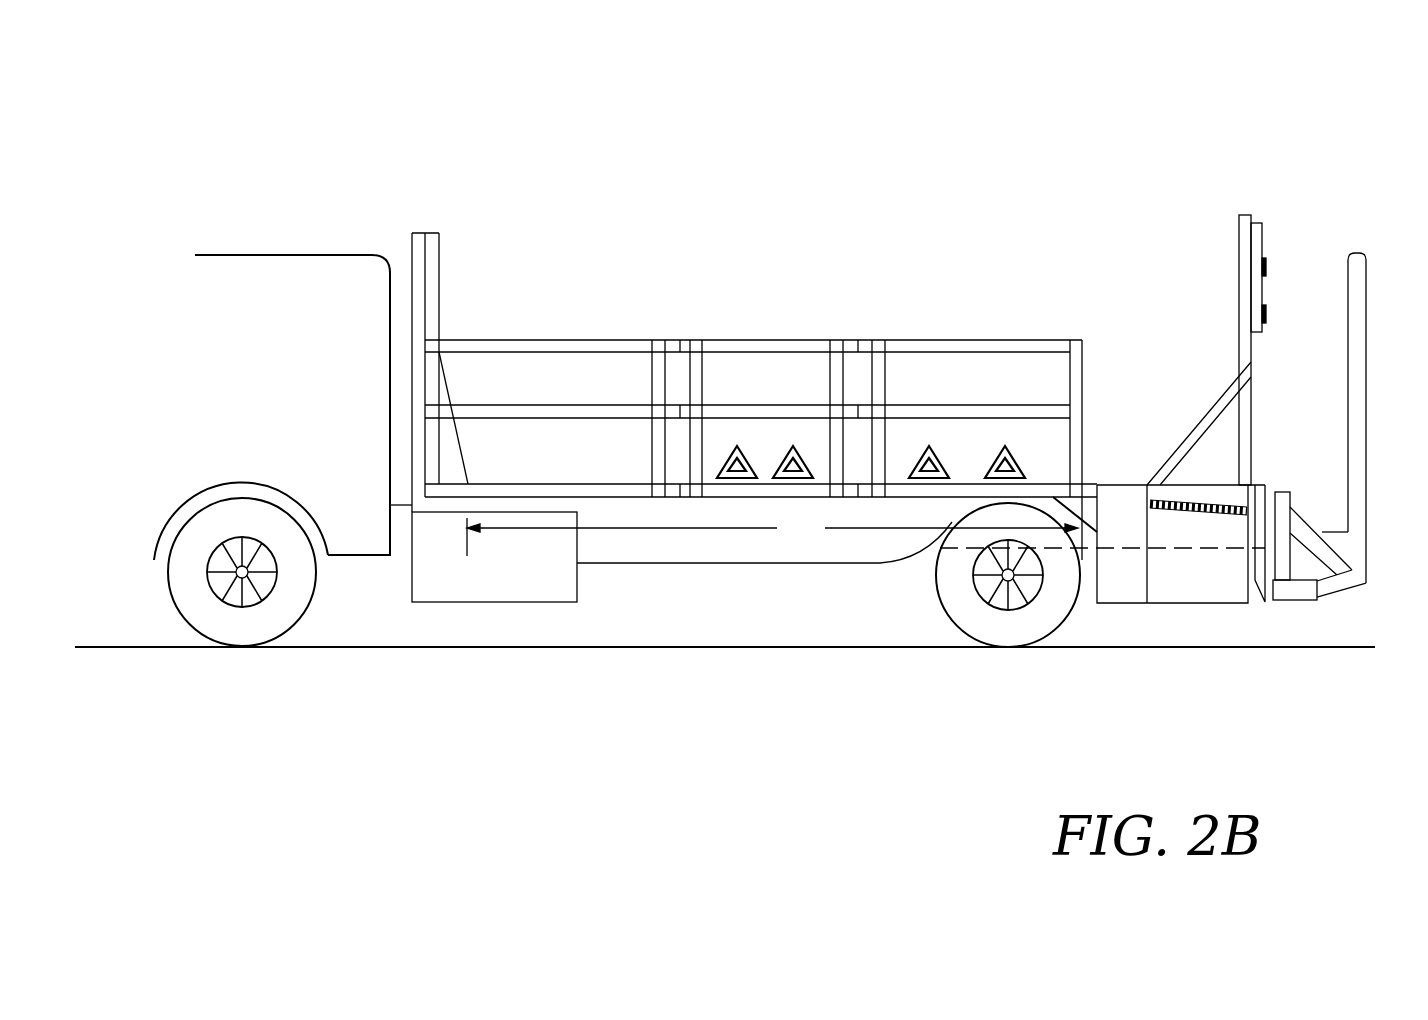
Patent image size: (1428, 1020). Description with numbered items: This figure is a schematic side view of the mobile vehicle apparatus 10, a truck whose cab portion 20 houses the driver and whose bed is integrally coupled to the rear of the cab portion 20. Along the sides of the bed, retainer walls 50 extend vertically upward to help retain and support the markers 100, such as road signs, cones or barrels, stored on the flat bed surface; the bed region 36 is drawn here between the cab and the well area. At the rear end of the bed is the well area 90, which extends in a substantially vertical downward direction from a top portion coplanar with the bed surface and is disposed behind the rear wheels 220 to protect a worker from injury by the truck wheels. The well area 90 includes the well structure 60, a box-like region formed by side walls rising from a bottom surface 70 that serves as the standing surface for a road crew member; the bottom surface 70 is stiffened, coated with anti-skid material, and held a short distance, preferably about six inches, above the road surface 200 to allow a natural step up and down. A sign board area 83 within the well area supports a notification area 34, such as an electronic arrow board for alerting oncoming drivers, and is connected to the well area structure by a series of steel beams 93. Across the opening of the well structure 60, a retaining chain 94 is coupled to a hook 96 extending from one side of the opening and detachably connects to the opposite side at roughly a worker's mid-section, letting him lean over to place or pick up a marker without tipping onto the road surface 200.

The mobile vehicle apparatus 10 is at (1327, 198).
The cab portion 20 is at (264, 255).
The notification area 34 is at (1264, 291).
The truck bed 36 is at (606, 473).
The retainer walls 50 is at (947, 348).
The well structure 60 is at (1192, 483).
The bottom surface 70 is at (1180, 594).
The sign board area 83 is at (1255, 349).
The well area 90 is at (1133, 412).
The steel beams 93 is at (1252, 404).
The chain 94 is at (1199, 513).
The hook 96 is at (1157, 493).
The markers 100 is at (1008, 457).
The road surface 200 is at (918, 646).
The rear wheels 220 is at (1068, 620).